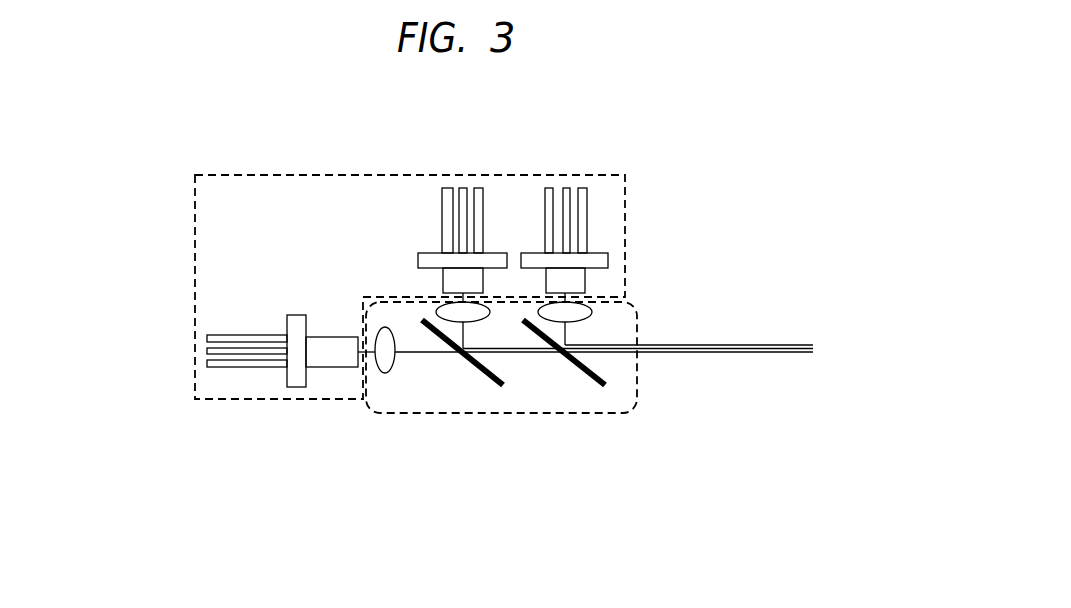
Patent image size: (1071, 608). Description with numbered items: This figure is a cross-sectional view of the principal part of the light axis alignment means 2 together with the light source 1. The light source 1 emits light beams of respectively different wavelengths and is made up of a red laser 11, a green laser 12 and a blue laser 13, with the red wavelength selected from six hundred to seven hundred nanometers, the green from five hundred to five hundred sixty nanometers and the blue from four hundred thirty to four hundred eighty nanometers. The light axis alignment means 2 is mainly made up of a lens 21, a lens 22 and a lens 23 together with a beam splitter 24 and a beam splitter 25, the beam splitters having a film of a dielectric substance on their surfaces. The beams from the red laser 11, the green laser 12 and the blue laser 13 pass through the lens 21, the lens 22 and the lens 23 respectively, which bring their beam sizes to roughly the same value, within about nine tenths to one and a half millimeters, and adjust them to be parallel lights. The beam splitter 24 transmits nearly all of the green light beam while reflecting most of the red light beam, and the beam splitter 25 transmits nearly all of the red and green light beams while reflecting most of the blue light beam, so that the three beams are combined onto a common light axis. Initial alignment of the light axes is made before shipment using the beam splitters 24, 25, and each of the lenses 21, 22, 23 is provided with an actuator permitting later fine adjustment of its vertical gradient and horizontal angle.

The light source 1 is at (625, 182).
The light axis alignment means 2 is at (616, 413).
The red laser 11 is at (432, 253).
The green laser 12 is at (280, 335).
The blue laser 13 is at (610, 253).
The lens 21 is at (438, 310).
The lens 22 is at (387, 373).
The lens 23 is at (590, 312).
The beam splitter 24 is at (490, 384).
The beam splitter 25 is at (578, 375).